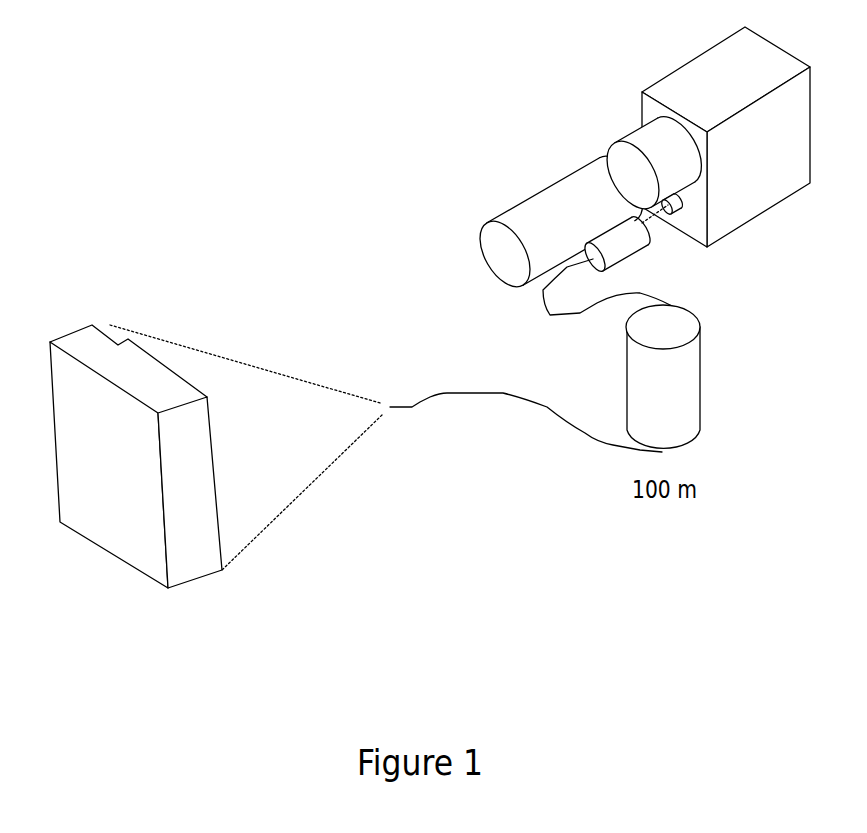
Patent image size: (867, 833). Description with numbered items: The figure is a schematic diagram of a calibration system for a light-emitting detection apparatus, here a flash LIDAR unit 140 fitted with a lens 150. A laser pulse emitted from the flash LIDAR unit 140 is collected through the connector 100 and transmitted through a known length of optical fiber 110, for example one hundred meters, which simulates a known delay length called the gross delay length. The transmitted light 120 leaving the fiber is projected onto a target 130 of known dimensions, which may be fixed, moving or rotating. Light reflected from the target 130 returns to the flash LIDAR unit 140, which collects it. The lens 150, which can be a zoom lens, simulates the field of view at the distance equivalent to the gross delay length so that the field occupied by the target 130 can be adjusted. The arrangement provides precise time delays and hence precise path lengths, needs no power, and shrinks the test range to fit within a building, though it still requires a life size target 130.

The connector 100 is at (625, 245).
The optical fiber 110 is at (672, 382).
The transmitted light 120 is at (278, 443).
The target 130 is at (135, 490).
The flash LIDAR unit 140 is at (755, 88).
The lens 150 is at (583, 224).